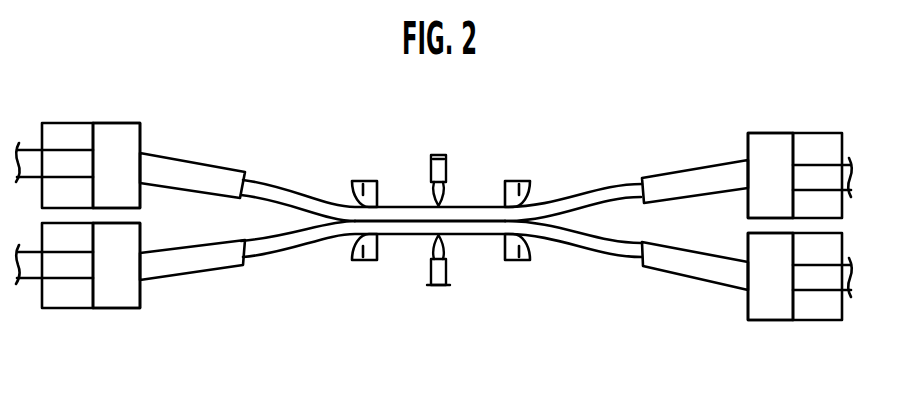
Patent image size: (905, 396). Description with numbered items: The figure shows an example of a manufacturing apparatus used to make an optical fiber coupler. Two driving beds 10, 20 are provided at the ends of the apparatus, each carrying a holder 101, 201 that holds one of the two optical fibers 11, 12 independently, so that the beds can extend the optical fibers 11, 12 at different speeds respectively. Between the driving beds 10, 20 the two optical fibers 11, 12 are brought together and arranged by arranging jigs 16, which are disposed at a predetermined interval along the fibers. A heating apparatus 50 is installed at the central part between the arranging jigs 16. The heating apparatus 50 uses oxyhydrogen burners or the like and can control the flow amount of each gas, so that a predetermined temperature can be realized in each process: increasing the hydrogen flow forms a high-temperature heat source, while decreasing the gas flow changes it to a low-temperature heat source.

The driving bed 10 is at (65, 116).
The holder 101 is at (127, 128).
The driving bed 20 is at (72, 312).
The holder 201 is at (117, 297).
The optical fiber 11 is at (277, 191).
The optical fiber 12 is at (280, 243).
The arranging jig 16 is at (367, 182).
The heating apparatus 50 is at (440, 157).